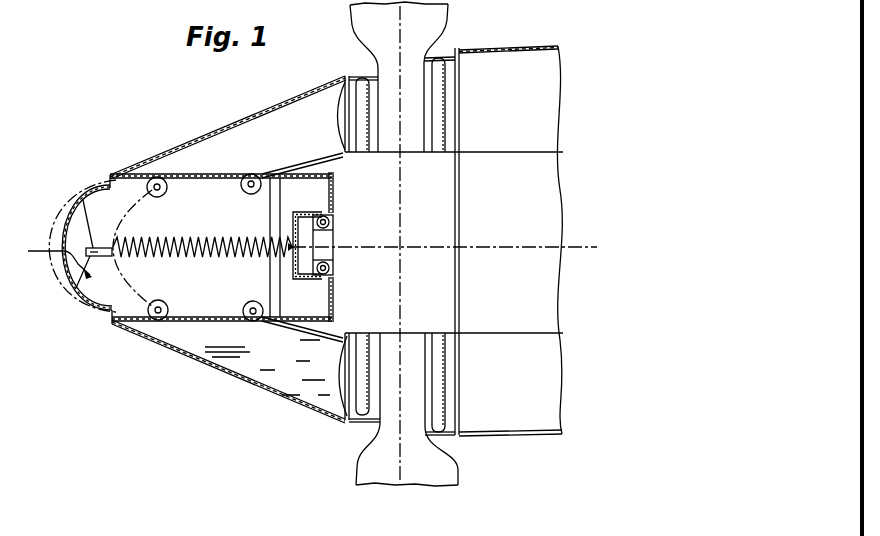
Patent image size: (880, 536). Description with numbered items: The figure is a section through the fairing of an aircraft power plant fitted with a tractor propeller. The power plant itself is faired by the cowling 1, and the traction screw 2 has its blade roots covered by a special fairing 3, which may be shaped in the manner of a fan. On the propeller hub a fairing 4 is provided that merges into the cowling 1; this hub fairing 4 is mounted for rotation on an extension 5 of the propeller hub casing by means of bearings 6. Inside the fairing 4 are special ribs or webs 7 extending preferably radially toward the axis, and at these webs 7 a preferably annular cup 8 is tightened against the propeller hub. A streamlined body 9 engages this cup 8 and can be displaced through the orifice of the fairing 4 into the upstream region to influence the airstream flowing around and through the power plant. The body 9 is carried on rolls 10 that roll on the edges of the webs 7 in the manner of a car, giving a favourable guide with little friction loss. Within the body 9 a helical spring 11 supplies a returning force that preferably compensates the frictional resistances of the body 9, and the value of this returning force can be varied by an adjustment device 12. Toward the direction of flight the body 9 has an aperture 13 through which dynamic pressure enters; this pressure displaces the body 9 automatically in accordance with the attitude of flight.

The cowling 1 is at (513, 48).
The traction screw 2 is at (433, 26).
The special fairing 3 is at (427, 126).
The fairing 4 is at (298, 405).
The extension 5 is at (337, 257).
The bearings 6 is at (333, 221).
The ribs or webs 7 is at (195, 153).
The cup 8 is at (308, 326).
The streamlined body 9 is at (102, 309).
The rolls 10 is at (161, 319).
The helical spring 11 is at (186, 241).
The adjustment device 12 is at (99, 248).
The aperture 13 is at (57, 258).